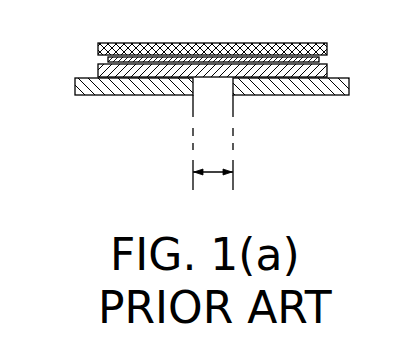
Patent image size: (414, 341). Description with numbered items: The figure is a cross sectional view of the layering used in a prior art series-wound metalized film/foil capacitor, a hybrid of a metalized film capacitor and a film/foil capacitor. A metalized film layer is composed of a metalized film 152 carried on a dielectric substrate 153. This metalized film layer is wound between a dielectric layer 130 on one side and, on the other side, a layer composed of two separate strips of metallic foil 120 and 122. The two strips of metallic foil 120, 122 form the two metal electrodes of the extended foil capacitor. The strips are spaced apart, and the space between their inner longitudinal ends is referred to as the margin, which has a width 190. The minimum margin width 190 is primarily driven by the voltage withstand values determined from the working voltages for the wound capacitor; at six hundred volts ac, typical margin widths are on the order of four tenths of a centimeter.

The metallic foil strip 120 is at (209, 104).
The metallic foil strip 122 is at (349, 84).
The dielectric layer 130 is at (327, 48).
The metalized film 152 is at (108, 60).
The dielectric substrate 153 is at (327, 69).
The margin width 190 is at (213, 173).